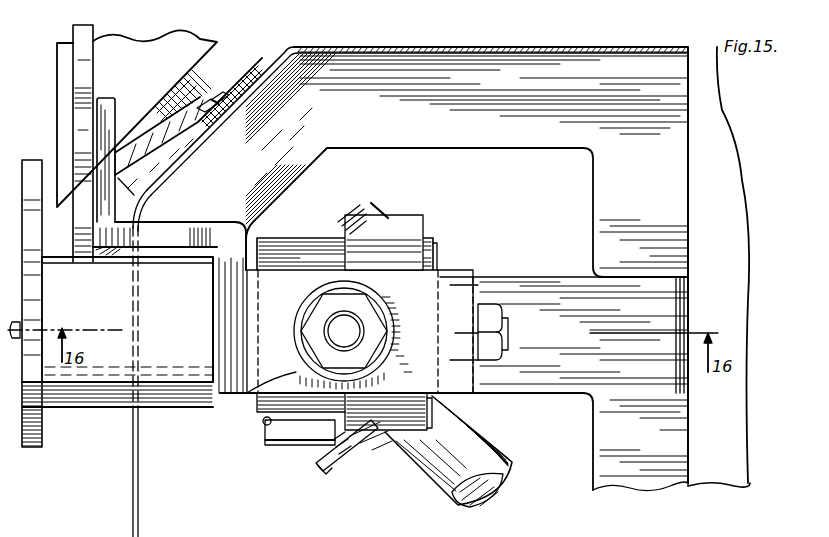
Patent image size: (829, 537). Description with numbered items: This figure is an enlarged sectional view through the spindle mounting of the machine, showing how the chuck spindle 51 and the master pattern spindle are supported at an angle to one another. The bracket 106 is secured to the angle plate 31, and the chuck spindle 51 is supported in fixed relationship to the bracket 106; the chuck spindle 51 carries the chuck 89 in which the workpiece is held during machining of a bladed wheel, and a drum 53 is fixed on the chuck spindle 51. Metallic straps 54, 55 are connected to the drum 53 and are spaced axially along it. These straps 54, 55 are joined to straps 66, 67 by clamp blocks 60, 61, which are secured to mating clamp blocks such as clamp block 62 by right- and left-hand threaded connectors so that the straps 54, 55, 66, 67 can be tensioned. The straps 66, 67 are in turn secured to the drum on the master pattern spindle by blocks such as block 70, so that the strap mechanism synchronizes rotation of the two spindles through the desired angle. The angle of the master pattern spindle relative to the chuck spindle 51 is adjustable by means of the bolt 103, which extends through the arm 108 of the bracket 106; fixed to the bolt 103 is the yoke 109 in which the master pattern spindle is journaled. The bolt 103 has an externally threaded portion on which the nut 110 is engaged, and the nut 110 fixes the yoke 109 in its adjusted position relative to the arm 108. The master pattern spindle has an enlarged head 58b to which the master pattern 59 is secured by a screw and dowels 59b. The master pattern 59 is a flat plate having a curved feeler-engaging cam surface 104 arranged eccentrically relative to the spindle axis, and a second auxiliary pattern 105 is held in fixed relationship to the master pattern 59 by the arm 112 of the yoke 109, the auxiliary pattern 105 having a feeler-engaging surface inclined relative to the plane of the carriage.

The angle plate 31 is at (742, 316).
The chuck spindle 51 is at (508, 452).
The drum 53 is at (340, 455).
The metallic strap 54 is at (358, 208).
The metallic strap 55 is at (322, 458).
The enlarged head 58b is at (184, 316).
The master pattern 59 is at (42, 423).
The dowels 59b is at (22, 322).
The clamp block 60 is at (370, 203).
The clamp block 61 is at (320, 470).
The clamp block 62 is at (408, 214).
The strap 66 is at (428, 236).
The strap 67 is at (262, 424).
The block 70 is at (271, 443).
The chuck 89 is at (178, 42).
The bolt 103 is at (357, 340).
The cam surface 104 is at (33, 241).
The second auxiliary pattern 105 is at (88, 69).
The bracket 106 is at (606, 193).
The arm 108 is at (497, 387).
The yoke 109 is at (272, 404).
The nut 110 is at (362, 302).
The arm 112 is at (176, 230).